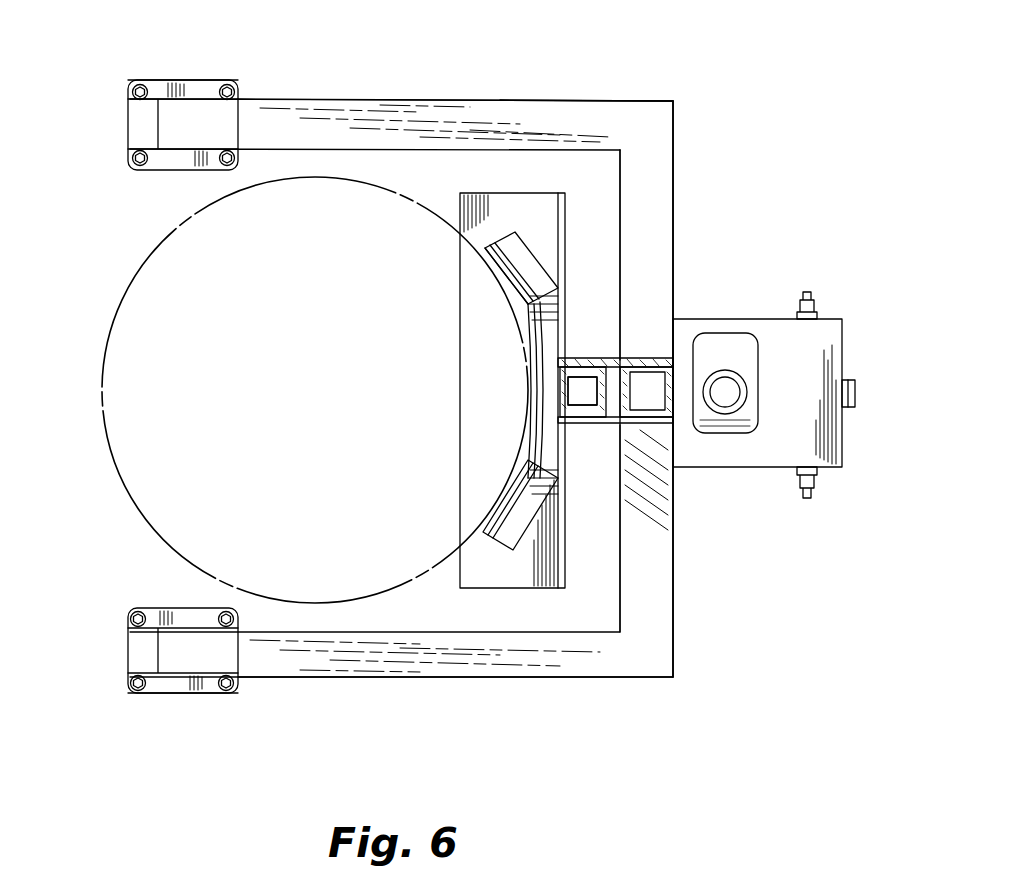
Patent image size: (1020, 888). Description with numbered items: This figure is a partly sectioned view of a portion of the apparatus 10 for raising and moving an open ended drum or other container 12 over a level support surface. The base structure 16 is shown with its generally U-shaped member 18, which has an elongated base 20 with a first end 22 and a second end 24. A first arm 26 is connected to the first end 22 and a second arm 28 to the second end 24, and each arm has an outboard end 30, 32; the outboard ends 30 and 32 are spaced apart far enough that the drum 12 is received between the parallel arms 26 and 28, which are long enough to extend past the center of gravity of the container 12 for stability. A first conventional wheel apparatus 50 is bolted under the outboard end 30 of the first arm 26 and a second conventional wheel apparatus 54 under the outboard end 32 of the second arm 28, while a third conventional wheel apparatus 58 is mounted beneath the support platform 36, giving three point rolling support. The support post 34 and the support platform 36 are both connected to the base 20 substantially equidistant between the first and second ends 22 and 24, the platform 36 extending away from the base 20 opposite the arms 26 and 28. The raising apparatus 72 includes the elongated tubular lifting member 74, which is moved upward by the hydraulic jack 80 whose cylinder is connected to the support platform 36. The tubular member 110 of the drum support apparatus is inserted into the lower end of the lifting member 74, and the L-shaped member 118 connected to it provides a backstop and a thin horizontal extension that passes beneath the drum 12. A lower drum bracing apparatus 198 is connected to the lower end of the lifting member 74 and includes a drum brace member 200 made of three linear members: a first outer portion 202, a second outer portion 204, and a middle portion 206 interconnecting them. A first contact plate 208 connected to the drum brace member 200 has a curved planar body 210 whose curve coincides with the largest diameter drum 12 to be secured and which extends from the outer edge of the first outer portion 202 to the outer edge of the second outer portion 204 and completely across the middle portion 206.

The apparatus 10 is at (681, 91).
The drum 12 is at (146, 263).
The base structure 16 is at (674, 112).
The U-shaped member 18 is at (544, 95).
The elongated base 20 is at (674, 140).
The first end 22 is at (618, 170).
The second end 24 is at (618, 612).
The first arm 26 is at (606, 100).
The second arm 28 is at (632, 677).
The outboard end 30 is at (128, 120).
The outboard end 32 is at (127, 648).
The support post 34 is at (641, 362).
The support platform 36 is at (842, 319).
The first conventional wheel apparatus 50 is at (186, 68).
The second conventional wheel apparatus 54 is at (205, 705).
The conventional wheel apparatus 58 is at (851, 372).
The raising apparatus 72 is at (598, 350).
The elongated tubular lifting member 74 is at (584, 422).
The hydraulic jack 80 is at (747, 388).
The tubular member 110 is at (583, 366).
The L-shaped member 118 is at (450, 528).
The lower drum bracing apparatus 198 is at (526, 228).
The drum brace member 200 is at (560, 268).
The first outer portion 202 is at (512, 287).
The second outer portion 204 is at (524, 497).
The middle portion 206 is at (533, 371).
The first contact plate 208 is at (517, 323).
The curved planar body 210 is at (524, 428).